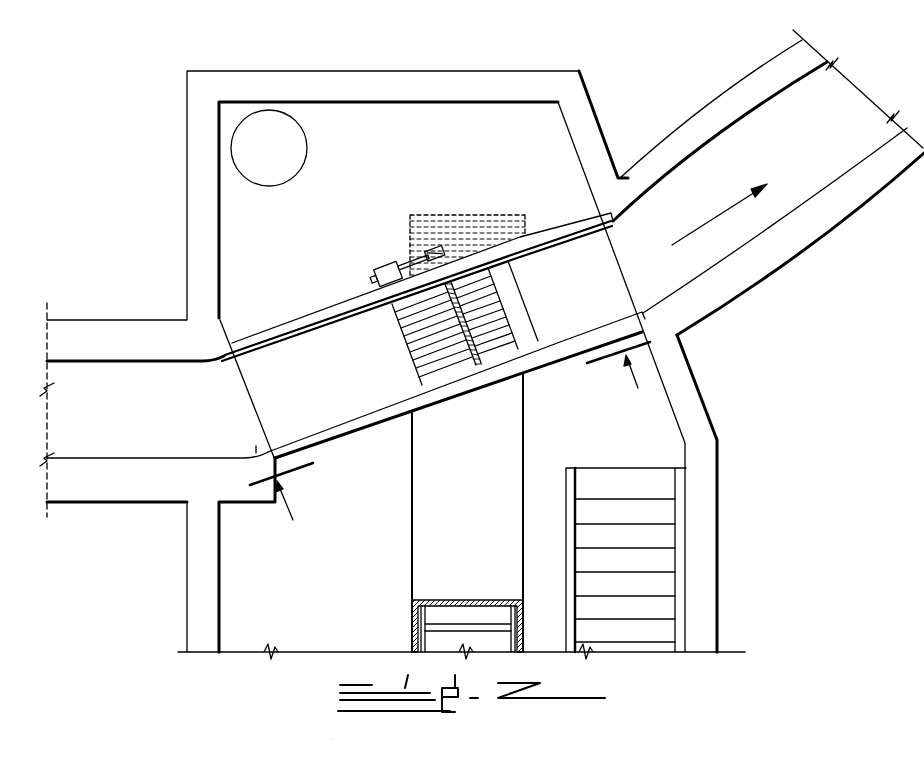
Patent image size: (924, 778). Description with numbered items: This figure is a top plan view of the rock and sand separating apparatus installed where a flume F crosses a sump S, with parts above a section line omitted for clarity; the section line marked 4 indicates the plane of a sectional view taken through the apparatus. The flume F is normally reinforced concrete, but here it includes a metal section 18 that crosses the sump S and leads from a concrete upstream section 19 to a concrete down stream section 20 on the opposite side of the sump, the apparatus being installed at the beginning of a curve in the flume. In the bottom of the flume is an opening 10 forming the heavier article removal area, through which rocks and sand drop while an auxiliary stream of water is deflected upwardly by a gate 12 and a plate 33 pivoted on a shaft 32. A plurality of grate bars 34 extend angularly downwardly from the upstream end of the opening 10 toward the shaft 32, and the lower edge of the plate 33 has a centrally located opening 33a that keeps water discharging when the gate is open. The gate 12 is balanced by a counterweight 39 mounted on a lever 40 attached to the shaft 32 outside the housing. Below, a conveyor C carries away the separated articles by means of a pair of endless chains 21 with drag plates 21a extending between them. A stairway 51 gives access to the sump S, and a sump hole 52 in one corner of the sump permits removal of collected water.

The opening 10 is at (407, 320).
The gate 12 is at (498, 324).
The metal section 18 is at (347, 432).
The upstream section 19 is at (140, 497).
The down stream section 20 is at (622, 212).
The endless chains 21 is at (510, 620).
The drag plates 21a is at (473, 630).
The shaft 32 is at (450, 262).
The quadri-cylindrical plate 33 is at (501, 293).
The opening 33a is at (483, 333).
The grate bars 34 is at (412, 352).
The counterweight 39 is at (379, 270).
The lever 40 is at (404, 266).
The stairway 51 is at (620, 478).
The sump hole 52 is at (308, 152).
The section line 4- 4 is at (450, 431).
The sump S is at (479, 106).
The conveyor C is at (468, 216).
The flume F is at (52, 435).